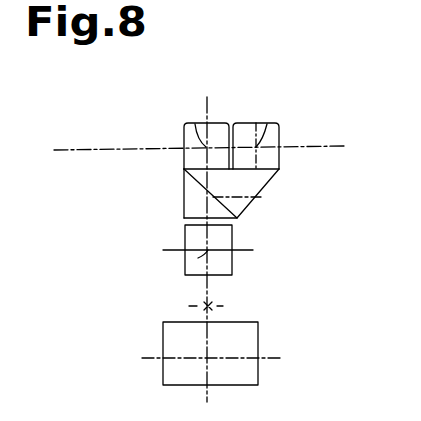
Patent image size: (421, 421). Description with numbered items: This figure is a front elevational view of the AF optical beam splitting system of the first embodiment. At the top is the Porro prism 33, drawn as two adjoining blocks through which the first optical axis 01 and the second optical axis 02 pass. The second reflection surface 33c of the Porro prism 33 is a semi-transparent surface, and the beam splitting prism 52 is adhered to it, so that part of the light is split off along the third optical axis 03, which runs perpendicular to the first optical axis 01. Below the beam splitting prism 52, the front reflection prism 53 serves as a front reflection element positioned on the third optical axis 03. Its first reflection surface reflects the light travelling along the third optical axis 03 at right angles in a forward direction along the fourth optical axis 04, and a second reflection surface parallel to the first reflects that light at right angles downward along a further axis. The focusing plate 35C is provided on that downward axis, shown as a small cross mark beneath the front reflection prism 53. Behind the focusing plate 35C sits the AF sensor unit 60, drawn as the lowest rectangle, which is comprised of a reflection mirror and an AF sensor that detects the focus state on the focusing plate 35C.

The Porro prism 33 is at (249, 108).
The optical axis O1 01 is at (190, 122).
The optical axis O2 02 is at (272, 123).
The second reflection surface 33c is at (183, 186).
The beam splitting prism 52 is at (195, 210).
The optical axis O3 03 is at (183, 231).
The front reflection prism 53 is at (222, 236).
The optical axis O4 04 is at (198, 258).
The focusing plate 35C is at (230, 304).
The AF sensor unit 60 is at (248, 375).